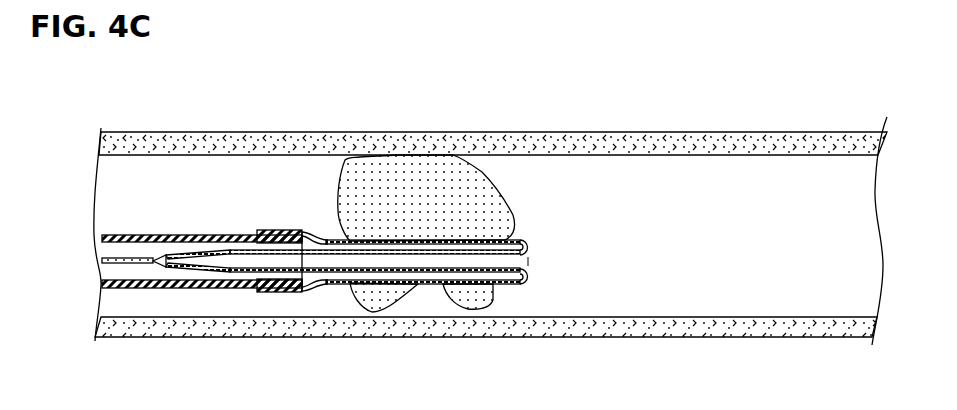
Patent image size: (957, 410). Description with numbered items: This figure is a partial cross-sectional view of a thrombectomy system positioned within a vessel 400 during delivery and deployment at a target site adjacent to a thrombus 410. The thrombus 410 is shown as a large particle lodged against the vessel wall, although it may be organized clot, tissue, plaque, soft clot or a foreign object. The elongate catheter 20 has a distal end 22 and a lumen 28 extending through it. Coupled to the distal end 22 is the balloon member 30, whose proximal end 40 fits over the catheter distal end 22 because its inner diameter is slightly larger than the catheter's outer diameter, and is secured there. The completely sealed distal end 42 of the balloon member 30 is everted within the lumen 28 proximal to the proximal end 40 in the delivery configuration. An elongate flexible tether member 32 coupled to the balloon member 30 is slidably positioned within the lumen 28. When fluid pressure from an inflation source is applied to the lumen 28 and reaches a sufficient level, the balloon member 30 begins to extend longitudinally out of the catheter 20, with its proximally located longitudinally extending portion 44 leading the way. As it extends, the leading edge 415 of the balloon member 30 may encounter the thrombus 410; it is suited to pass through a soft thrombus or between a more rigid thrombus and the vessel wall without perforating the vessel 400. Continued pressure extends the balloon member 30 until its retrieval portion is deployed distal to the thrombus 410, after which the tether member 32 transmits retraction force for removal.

The vessel 400 is at (259, 133).
The thrombus 410 is at (420, 170).
The leading edge 415 is at (530, 265).
The distal end 22 is at (220, 235).
The catheter 20 is at (112, 283).
The distal end of balloon member 42 is at (198, 282).
The proximal end of balloon member 40 is at (330, 284).
The balloon member 30 is at (462, 284).
The longitudinally extending portion 44 is at (400, 284).
The lumen 28 is at (167, 255).
The tether member 32 is at (128, 259).